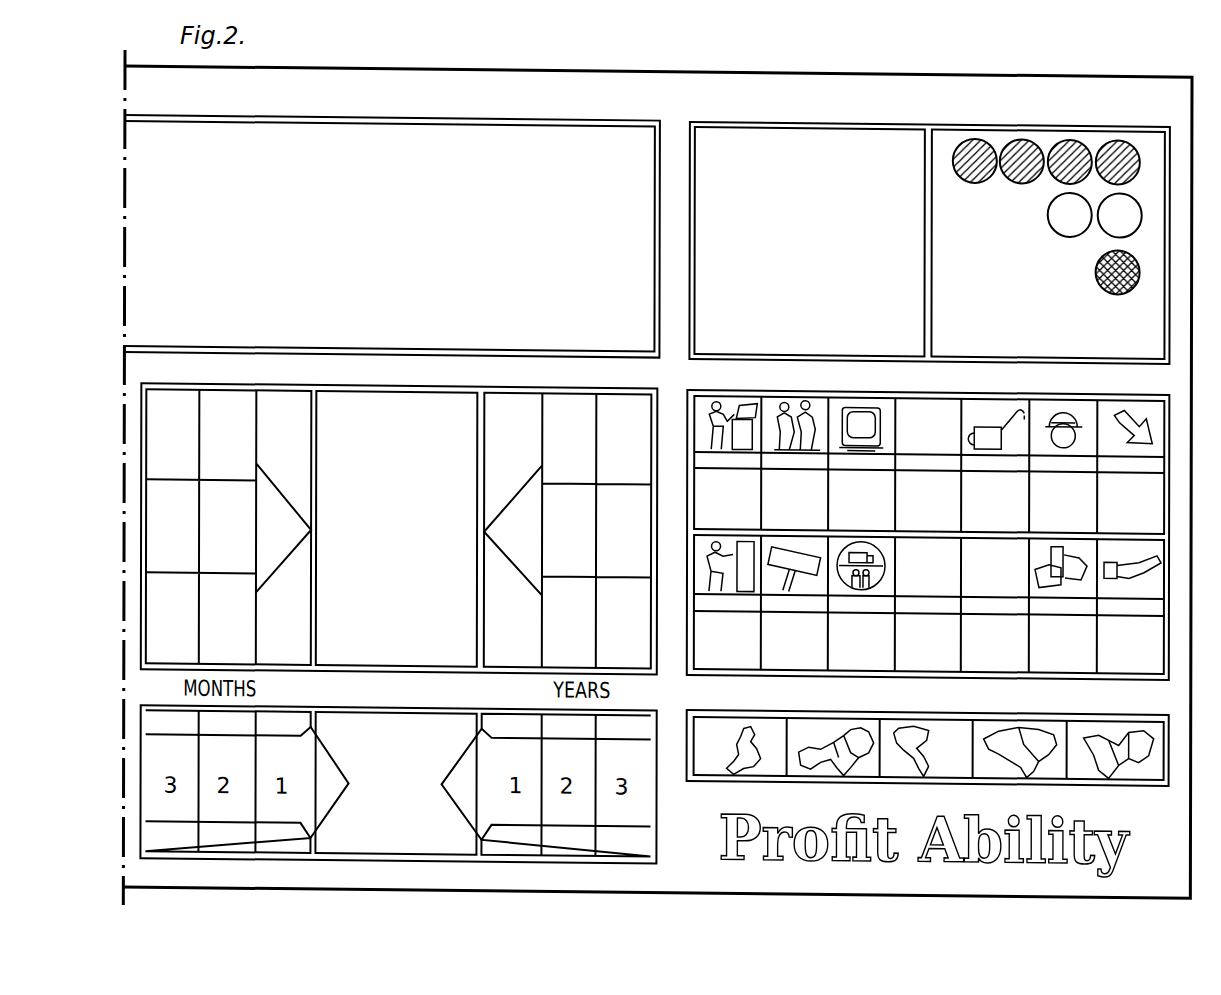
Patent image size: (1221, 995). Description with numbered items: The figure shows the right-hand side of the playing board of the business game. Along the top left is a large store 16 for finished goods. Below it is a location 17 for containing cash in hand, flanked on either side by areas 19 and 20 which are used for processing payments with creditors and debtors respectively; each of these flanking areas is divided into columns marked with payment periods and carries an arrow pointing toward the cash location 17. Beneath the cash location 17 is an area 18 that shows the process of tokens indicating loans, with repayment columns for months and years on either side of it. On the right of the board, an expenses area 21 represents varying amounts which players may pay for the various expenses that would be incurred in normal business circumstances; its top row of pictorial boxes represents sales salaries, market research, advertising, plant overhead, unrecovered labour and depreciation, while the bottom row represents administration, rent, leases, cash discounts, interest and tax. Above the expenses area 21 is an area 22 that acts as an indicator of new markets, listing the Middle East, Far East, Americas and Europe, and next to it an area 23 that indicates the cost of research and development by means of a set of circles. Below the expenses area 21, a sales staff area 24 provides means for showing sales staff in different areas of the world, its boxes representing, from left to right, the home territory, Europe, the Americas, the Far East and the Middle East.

The store for finished goods 16 is at (421, 233).
The location for cash in hand 17 is at (411, 441).
The loans area 18 is at (411, 748).
The creditors area 19 is at (241, 443).
The debtors area 20 is at (586, 434).
The expenses area 21 is at (936, 504).
The new markets area 22 is at (869, 240).
The research and development area 23 is at (1026, 268).
The sales staff area 24 is at (844, 699).